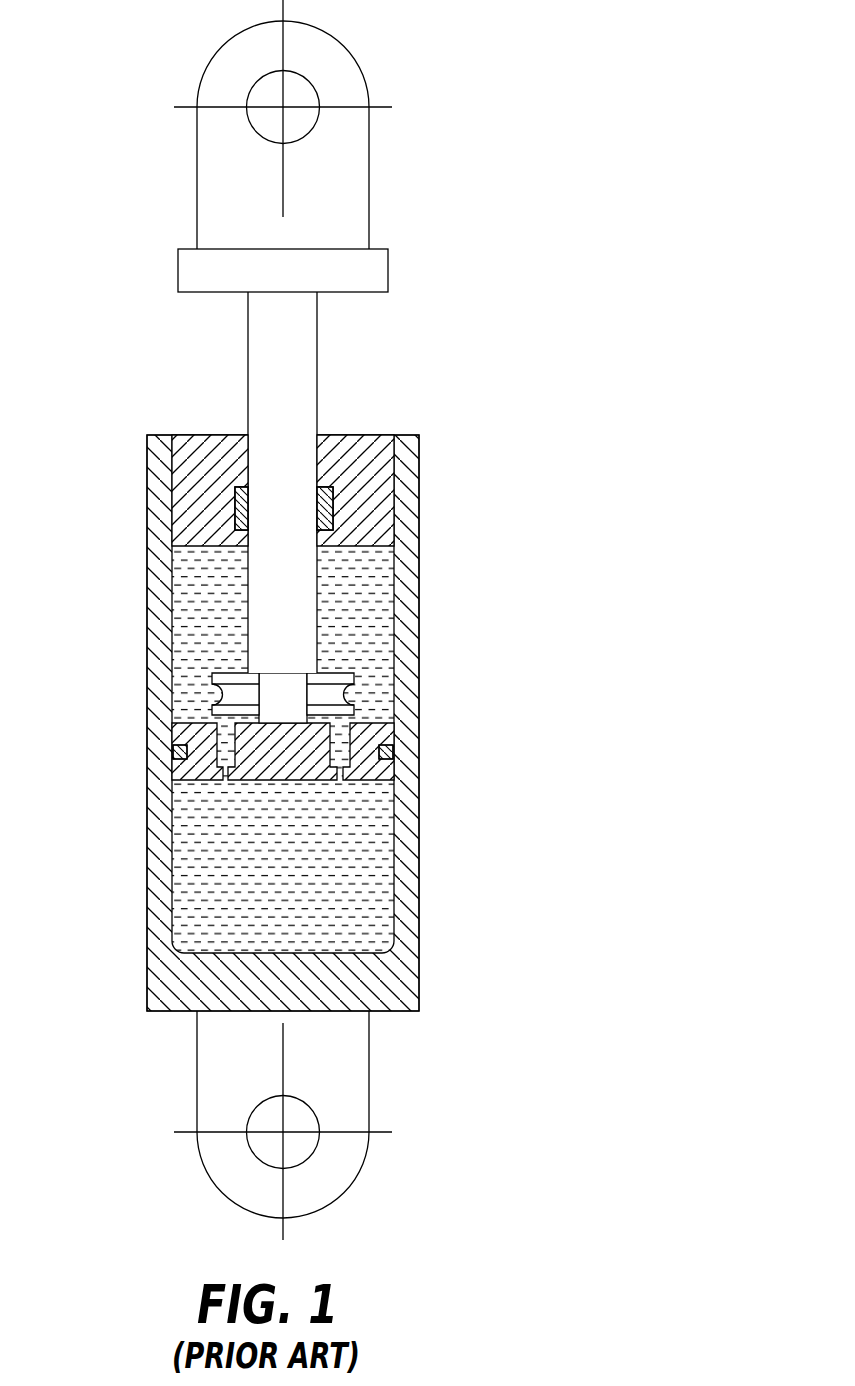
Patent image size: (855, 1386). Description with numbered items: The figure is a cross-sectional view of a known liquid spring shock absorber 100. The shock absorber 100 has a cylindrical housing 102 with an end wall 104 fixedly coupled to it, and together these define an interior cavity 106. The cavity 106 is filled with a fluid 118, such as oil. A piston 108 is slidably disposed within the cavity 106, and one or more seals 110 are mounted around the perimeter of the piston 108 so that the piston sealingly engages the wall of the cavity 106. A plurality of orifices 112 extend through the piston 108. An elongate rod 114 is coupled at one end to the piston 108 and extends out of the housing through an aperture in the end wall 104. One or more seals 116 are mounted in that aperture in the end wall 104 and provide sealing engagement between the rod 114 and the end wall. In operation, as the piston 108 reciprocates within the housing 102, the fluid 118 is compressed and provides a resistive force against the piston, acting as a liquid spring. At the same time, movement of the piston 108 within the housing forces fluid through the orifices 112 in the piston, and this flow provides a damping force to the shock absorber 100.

The liquid spring shock absorber 100 is at (481, 160).
The cylindrical housing 102 is at (420, 768).
The end wall 104 is at (212, 435).
The interior cavity 106 is at (394, 636).
The piston 108 is at (202, 782).
The seals 110 is at (173, 752).
The orifices 112 is at (350, 745).
The elongate rod 114 is at (318, 358).
The seals 116 is at (237, 503).
The fluid 118 is at (190, 625).